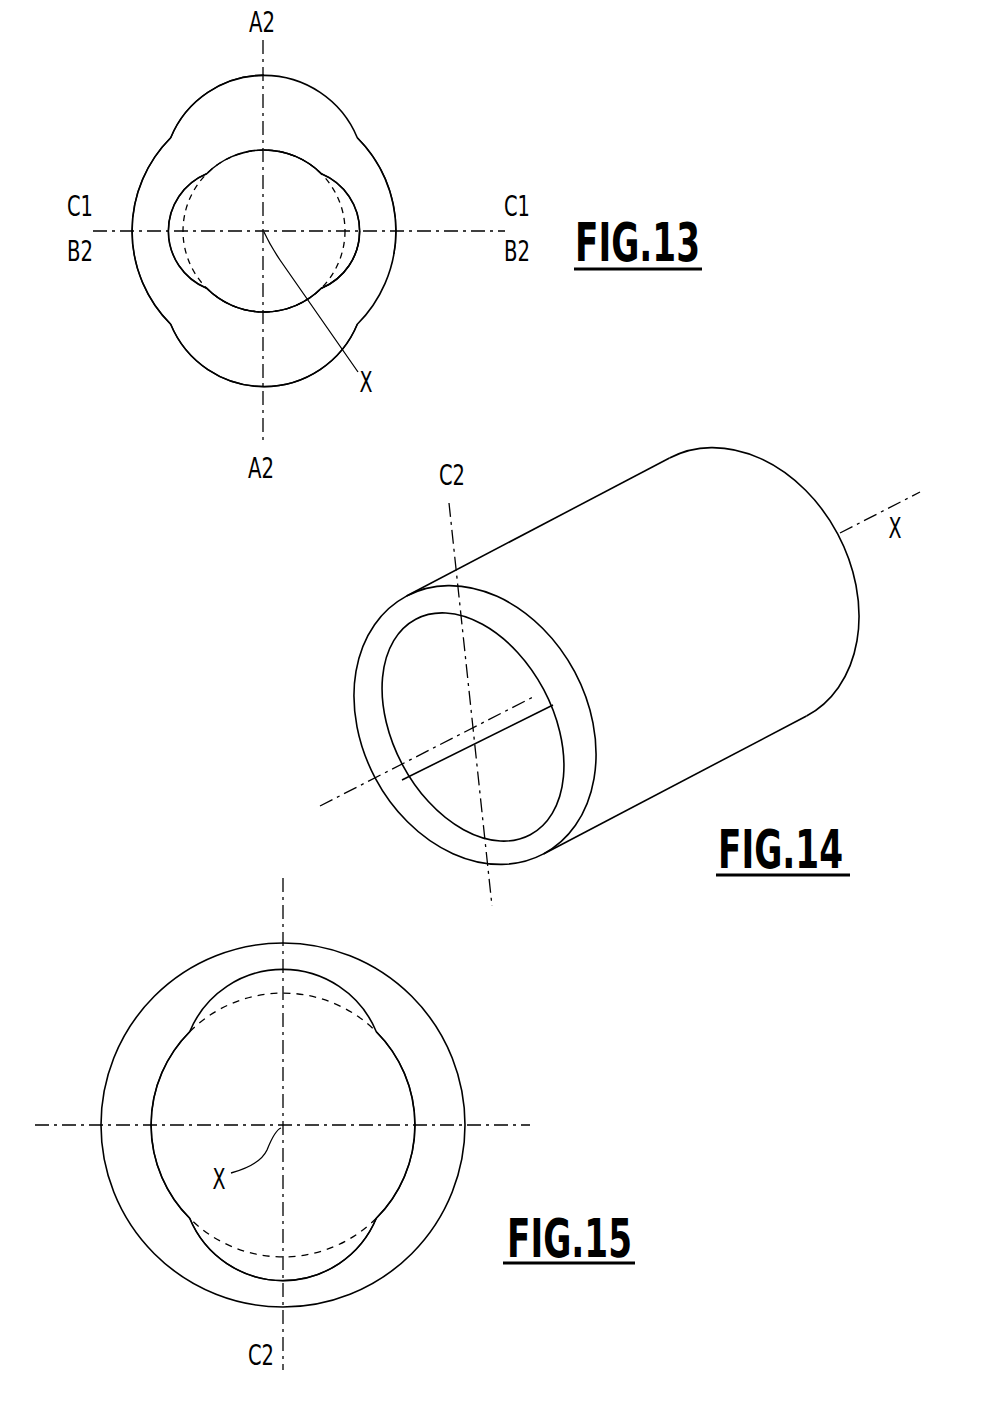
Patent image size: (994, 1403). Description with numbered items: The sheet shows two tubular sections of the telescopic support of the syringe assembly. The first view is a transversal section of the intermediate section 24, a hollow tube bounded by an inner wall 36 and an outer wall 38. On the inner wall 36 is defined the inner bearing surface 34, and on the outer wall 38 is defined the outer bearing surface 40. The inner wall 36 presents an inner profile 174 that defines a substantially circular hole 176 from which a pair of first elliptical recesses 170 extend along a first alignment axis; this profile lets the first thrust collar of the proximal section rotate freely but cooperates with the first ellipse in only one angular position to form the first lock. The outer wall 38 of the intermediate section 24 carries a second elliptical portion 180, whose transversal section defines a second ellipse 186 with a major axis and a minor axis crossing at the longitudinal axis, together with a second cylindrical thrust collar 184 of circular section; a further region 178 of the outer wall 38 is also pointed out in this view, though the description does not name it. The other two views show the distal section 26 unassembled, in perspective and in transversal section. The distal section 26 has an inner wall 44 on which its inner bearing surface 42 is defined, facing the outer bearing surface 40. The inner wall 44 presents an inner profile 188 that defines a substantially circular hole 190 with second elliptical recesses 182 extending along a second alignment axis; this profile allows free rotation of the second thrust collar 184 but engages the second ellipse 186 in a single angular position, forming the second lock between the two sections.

In FIG. 13, the outer wall 38 is at (278, 72).
In FIG. 13, the intermediate section 24 is at (390, 192).
In FIG. 13, the outer bearing surface 40 is at (400, 213).
In FIG. 13, the inner bearing surface 34 is at (315, 176).
In FIG. 13, the inner wall 36 is at (217, 175).
In FIG. 13, the first elliptical recess 170 is at (348, 256).
In FIG. 13, the inner profile 174 is at (283, 188).
In FIG. 13, the circular hole 176 is at (273, 278).
In FIG. 13, the outer surface portion 178 is at (177, 258).
In FIG. 13, the second elliptical portion 180 is at (198, 118).
In FIG. 13, the second cylindrical thrust collar 184 is at (182, 165).
In FIG. 13, the second ellipse 186 is at (238, 384).
In FIG. 14, the distal section 26 is at (628, 578).
In FIG. 15, the distal section 26 is at (433, 1022).
In FIG. 15, the inner bearing surface 42 is at (319, 938).
In FIG. 15, the inner wall 44 is at (385, 1055).
In FIG. 14, the second elliptical recess 182 is at (403, 698).
In FIG. 15, the second elliptical recess 182 is at (315, 1258).
In FIG. 15, the inner profile 188 is at (383, 1102).
In FIG. 14, the circular hole 190 is at (440, 797).
In FIG. 15, the circular hole 190 is at (227, 1078).